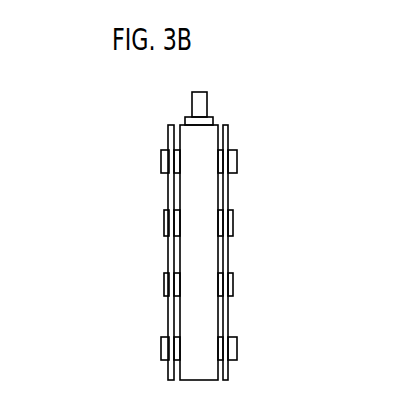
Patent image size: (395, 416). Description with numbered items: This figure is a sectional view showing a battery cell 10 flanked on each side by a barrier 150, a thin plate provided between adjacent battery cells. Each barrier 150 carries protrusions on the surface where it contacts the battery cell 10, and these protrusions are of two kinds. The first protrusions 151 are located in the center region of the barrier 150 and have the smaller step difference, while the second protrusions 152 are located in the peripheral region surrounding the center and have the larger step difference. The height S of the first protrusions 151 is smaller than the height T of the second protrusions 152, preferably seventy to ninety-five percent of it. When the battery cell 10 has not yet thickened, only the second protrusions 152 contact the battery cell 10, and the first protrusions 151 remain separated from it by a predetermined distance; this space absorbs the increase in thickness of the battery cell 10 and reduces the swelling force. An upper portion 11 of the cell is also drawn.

The battery cell 10 is at (208, 138).
The cap / upper end portion 11 is at (199, 95).
The barrier 150 is at (169, 125).
The first protrusions 151 is at (163, 218).
The second protrusions 152 is at (161, 160).
The height of the second protrusion T is at (197, 143).
The height of the first protrusion S is at (197, 203).